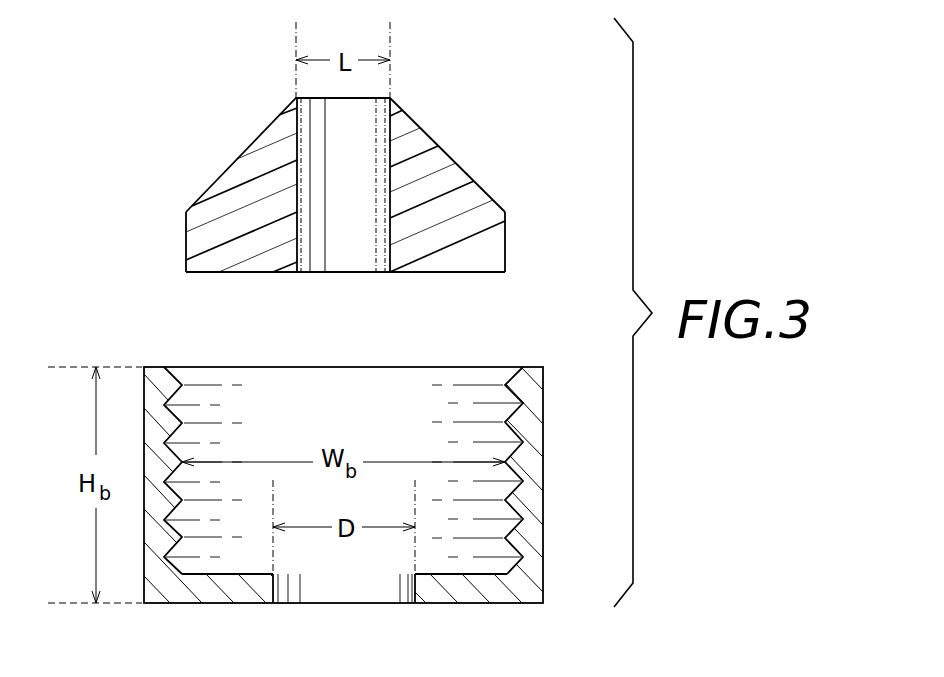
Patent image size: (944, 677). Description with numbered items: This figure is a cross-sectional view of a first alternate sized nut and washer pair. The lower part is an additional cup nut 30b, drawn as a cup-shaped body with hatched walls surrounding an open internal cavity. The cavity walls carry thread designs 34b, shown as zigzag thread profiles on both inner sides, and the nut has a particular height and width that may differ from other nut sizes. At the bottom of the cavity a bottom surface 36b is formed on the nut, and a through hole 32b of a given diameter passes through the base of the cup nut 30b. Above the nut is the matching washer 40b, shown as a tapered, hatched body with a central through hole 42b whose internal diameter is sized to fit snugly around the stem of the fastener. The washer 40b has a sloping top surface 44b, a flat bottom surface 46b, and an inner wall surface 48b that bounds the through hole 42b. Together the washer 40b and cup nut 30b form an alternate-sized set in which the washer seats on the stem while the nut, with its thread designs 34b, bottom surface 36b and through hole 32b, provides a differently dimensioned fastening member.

The cup nut 30b is at (123, 337).
The through hole 32b is at (378, 593).
The thread designs 34b is at (183, 423).
The bottom surface 36b is at (219, 573).
The washer 40b is at (203, 139).
The through hole 42b is at (347, 248).
The top surface 44b is at (442, 148).
The bottom surface 46b is at (444, 272).
The inner wall surface 48b is at (300, 167).